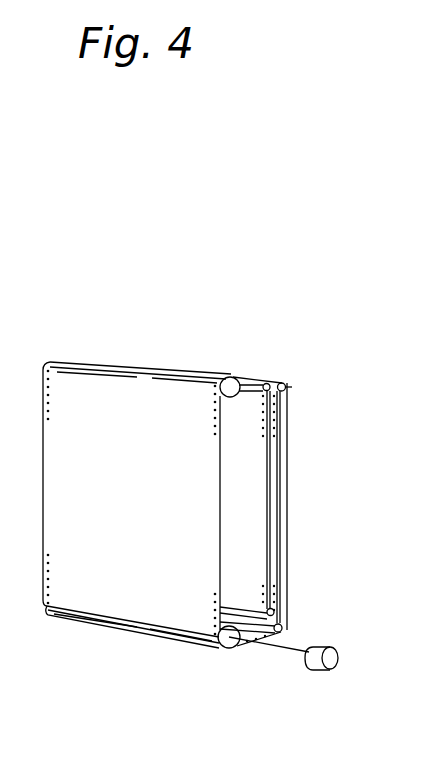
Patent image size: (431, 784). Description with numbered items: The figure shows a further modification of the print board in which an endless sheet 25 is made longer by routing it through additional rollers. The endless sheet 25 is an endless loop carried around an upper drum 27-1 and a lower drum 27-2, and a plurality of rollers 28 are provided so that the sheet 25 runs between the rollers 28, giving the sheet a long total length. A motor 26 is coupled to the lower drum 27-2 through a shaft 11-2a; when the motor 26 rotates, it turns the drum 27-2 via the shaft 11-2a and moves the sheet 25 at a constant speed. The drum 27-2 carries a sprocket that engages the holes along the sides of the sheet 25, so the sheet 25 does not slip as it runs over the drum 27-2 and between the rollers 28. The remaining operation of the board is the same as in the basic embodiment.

The endless sheet 25 is at (213, 509).
The drum 27-1 is at (232, 377).
The drum 27-2 is at (217, 648).
The rollers 28 is at (268, 382).
The shaft 11-2a is at (278, 650).
The motor 26 is at (333, 664).